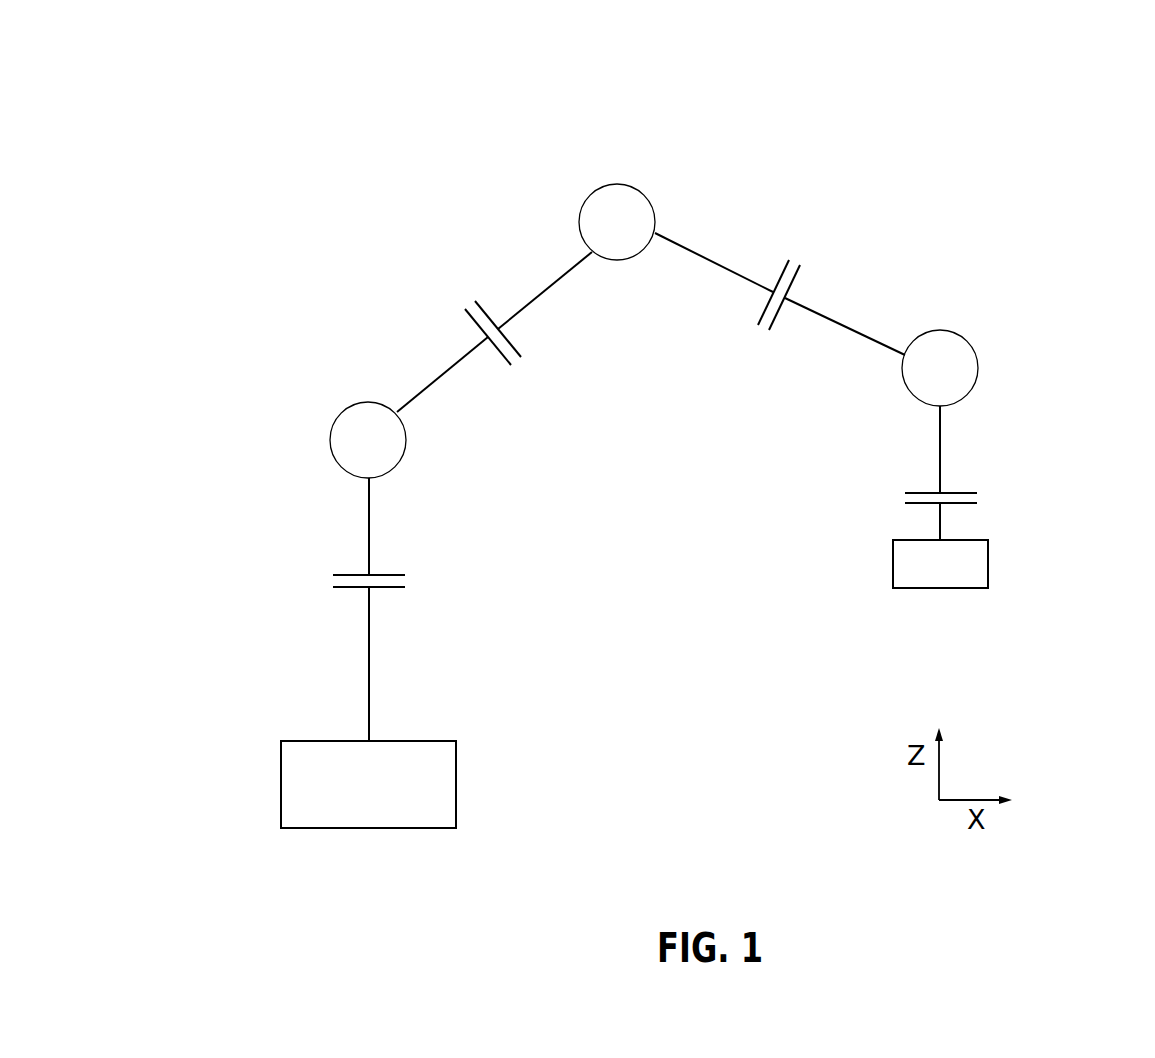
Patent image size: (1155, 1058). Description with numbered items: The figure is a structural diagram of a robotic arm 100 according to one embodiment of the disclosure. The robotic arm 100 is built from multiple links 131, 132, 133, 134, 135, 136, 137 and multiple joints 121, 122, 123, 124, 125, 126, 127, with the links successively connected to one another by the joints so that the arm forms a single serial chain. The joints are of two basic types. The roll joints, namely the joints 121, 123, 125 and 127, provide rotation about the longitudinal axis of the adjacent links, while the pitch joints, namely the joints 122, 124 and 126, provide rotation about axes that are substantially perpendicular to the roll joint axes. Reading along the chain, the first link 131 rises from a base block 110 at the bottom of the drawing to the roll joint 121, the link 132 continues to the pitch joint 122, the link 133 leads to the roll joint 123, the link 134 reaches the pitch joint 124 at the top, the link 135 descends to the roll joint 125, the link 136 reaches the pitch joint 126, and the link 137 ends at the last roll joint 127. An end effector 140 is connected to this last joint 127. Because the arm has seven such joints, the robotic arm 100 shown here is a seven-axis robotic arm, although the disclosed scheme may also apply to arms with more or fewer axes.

The robotic arm 100 is at (367, 76).
The base 110 is at (393, 790).
The joint 121 is at (333, 575).
The joint 122 is at (363, 423).
The joint 123 is at (481, 303).
The joint 124 is at (612, 207).
The joint 125 is at (782, 272).
The joint 126 is at (953, 347).
The joint 127 is at (967, 492).
The link 131 is at (368, 648).
The link 132 is at (368, 520).
The link 133 is at (437, 373).
The link 134 is at (560, 270).
The link 135 is at (692, 253).
The link 136 is at (835, 320).
The link 137 is at (942, 457).
The end effector 140 is at (940, 570).